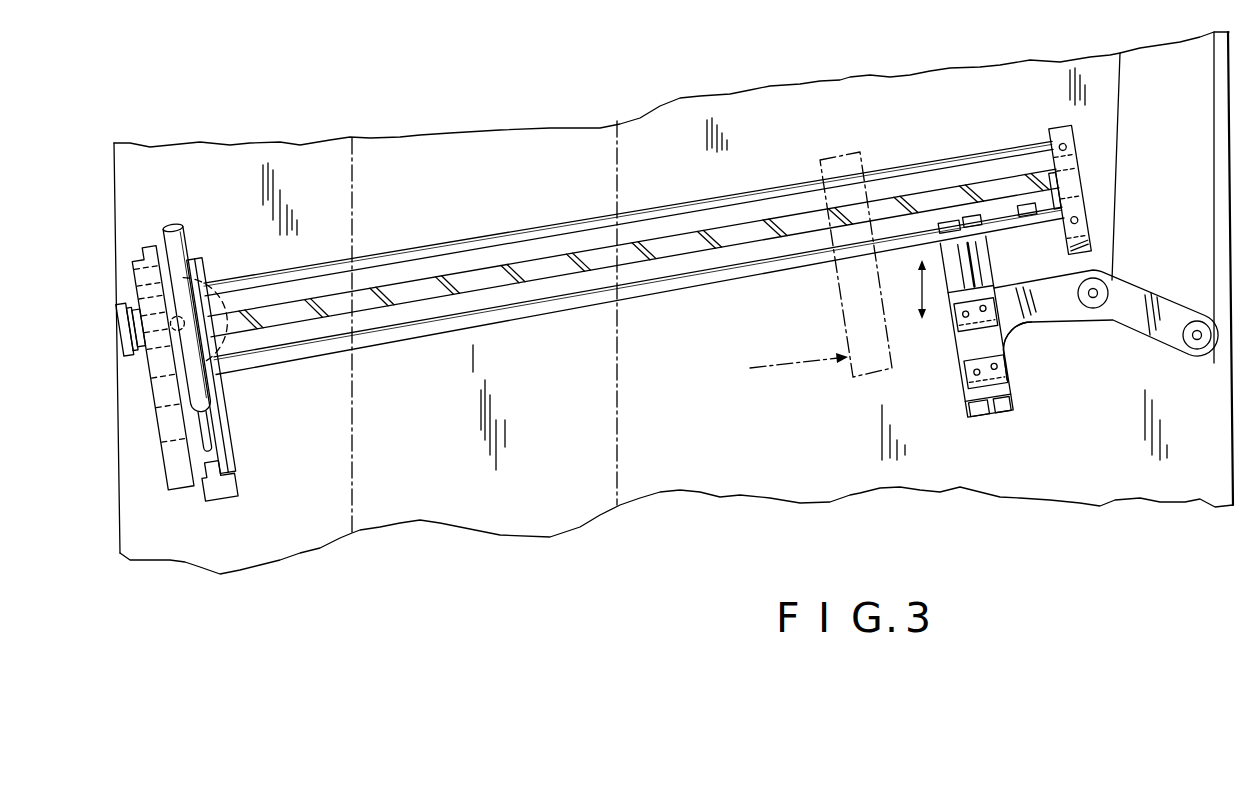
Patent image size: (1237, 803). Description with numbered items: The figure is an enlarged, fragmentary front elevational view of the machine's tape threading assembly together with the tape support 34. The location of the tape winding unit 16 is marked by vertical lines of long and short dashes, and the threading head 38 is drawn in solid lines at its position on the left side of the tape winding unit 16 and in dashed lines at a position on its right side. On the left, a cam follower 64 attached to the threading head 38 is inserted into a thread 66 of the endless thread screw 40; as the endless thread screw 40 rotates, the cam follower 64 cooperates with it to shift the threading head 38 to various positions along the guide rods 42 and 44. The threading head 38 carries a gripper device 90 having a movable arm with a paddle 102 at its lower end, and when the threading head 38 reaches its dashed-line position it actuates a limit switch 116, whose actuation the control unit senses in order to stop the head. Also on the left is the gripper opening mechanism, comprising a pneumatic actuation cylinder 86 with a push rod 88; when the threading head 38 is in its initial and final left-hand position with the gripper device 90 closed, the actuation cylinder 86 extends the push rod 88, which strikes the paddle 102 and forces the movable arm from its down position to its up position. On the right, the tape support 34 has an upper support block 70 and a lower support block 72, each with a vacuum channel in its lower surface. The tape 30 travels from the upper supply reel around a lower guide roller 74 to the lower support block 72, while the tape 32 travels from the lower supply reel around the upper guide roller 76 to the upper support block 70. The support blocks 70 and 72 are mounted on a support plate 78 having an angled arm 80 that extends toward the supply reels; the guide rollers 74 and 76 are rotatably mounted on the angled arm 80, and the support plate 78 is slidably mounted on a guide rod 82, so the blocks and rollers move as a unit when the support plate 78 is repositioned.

The tape winding unit 16 is at (424, 481).
The tape 30 is at (1212, 84).
The tape 32 is at (1117, 185).
The tape support 34 is at (1020, 352).
The threading head 38 is at (200, 257).
The endless thread screw 40 is at (805, 220).
The guide rod 42 is at (665, 208).
The guide rod 44 is at (763, 266).
The cam follower 64 is at (216, 288).
The thread 66 is at (440, 275).
The upper support block 70 is at (955, 327).
The lower support block 72 is at (960, 387).
The lower guide roller 74 is at (1198, 320).
The upper guide roller 76 is at (1110, 295).
The support plate 78 is at (962, 354).
The angled arm 80 is at (1115, 318).
The guide rod 82 is at (967, 263).
The pneumatic actuation cylinder 86 is at (176, 222).
The push rod 88 is at (212, 442).
The gripper device 90 is at (191, 498).
The paddle 102 is at (230, 494).
The limit switch 116 is at (1025, 205).